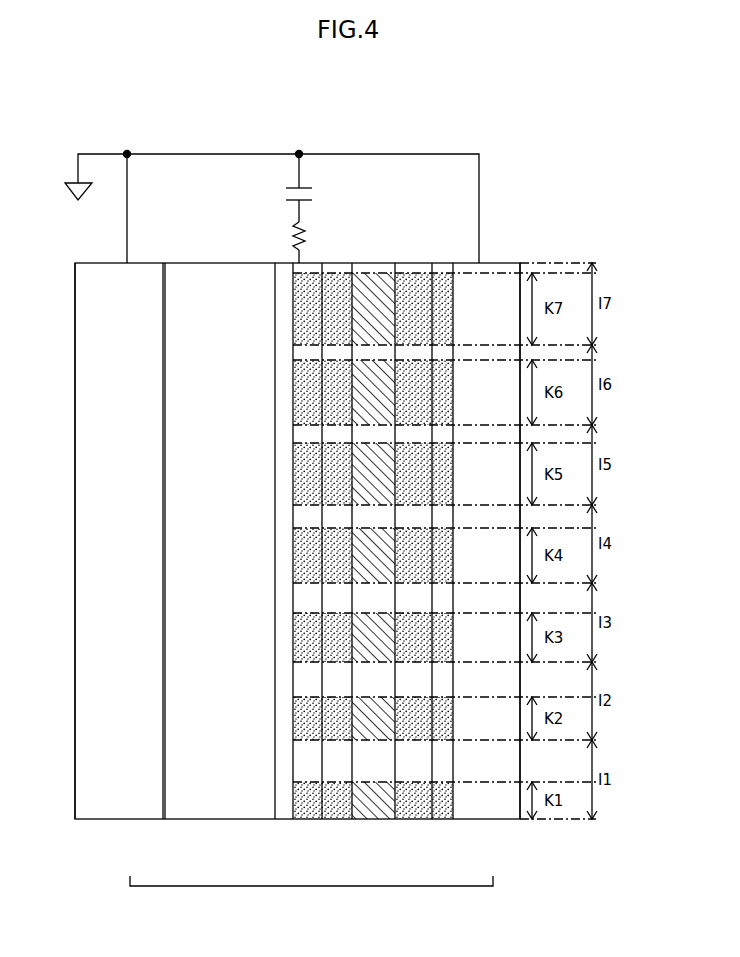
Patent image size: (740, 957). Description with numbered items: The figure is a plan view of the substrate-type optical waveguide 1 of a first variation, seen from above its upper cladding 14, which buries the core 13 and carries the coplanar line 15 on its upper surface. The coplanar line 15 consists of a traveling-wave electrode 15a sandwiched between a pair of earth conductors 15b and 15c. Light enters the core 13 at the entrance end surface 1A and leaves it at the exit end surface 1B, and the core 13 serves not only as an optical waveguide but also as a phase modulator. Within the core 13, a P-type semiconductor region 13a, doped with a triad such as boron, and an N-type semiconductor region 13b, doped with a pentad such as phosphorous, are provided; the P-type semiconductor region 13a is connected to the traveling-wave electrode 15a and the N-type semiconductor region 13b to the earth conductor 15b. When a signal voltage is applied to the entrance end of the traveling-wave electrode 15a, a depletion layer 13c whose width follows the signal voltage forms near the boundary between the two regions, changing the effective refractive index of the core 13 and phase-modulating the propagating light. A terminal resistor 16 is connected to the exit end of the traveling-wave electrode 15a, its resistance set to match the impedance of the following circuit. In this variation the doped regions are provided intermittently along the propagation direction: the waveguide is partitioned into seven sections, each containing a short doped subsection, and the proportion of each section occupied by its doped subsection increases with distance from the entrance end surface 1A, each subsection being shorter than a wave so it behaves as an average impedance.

The substrate-type optical waveguide 1 is at (510, 197).
The entrance end surface 1A is at (97, 821).
The exit end surface 1B is at (107, 260).
The core 13 is at (444, 564).
The P-type semiconductor region 13a is at (326, 821).
The N-type semiconductor region 13b is at (425, 821).
The depletion layer 13c is at (376, 821).
The upper cladding 14 is at (227, 260).
The coplanar line 15 is at (312, 887).
The traveling-wave electrode 15a is at (287, 821).
The earth conductor 15b is at (470, 821).
The earth conductor 15c is at (152, 821).
The terminal resistor 16 is at (306, 238).